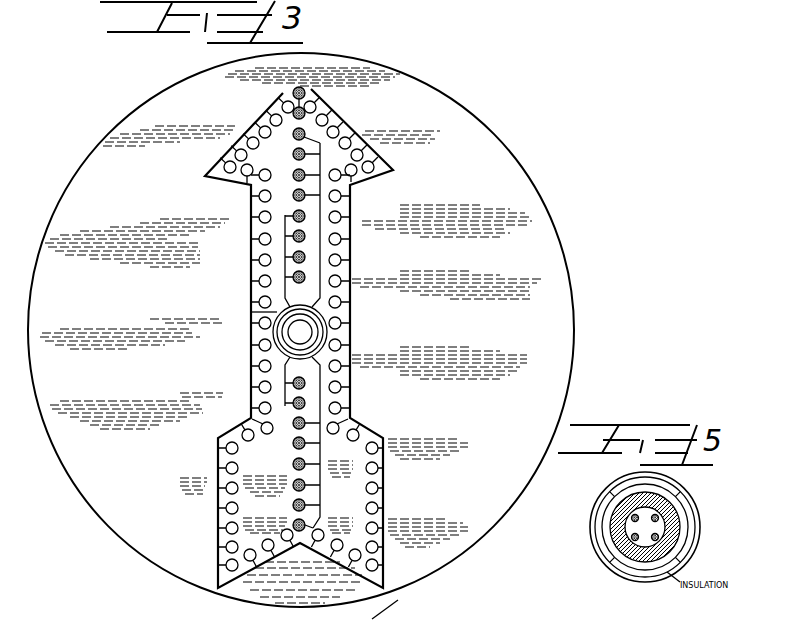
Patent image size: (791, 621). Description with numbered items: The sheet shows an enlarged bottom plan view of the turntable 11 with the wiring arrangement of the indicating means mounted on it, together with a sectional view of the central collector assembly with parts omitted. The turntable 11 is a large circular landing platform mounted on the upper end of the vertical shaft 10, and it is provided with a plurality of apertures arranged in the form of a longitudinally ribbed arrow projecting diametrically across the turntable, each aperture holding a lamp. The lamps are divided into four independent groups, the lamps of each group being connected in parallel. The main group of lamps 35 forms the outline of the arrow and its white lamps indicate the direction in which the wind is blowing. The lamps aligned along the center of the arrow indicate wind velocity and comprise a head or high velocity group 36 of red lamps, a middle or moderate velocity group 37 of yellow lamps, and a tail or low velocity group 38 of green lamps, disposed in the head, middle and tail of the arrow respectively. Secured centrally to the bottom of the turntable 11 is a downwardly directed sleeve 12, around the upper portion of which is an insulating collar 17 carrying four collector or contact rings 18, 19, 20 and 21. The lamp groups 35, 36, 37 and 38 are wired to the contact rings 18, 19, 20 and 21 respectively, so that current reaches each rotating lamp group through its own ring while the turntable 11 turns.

In FIG. 5, the vertical shaft 10 is at (607, 550).
In FIG. 3, the turntable 11 is at (301, 330).
In FIG. 5, the sleeve 12 is at (605, 527).
In FIG. 5, the insulating collar 17 is at (687, 530).
In FIG. 3, the contact ring 18 is at (319, 313).
In FIG. 5, the contact ring 18 is at (688, 503).
In FIG. 3, the contact ring 19 is at (287, 333).
In FIG. 3, the contact ring 20 is at (327, 326).
In FIG. 3, the contact ring 21 is at (282, 348).
In FIG. 3, the main group of lamps 35 is at (364, 427).
In FIG. 3, the head or high velocity group 36 is at (324, 159).
In FIG. 3, the middle or moderate velocity group 37 is at (282, 263).
In FIG. 3, the tail or low velocity group 38 is at (320, 450).